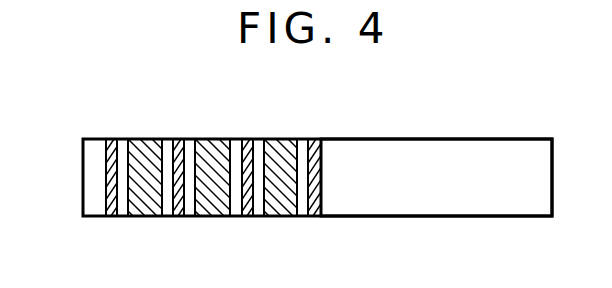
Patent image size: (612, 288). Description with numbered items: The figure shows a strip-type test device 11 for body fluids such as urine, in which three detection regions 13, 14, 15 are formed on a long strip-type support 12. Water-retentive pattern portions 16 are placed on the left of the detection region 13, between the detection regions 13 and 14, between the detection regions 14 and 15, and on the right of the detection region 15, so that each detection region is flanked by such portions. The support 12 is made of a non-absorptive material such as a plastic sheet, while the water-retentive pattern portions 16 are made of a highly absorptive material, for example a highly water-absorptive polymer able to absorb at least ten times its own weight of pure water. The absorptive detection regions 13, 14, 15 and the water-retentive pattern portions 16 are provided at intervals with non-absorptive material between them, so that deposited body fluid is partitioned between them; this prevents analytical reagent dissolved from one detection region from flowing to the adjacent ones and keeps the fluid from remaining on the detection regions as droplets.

The strip-type test device 11 is at (82, 178).
The support 12 is at (438, 150).
The detection region 13 is at (143, 138).
The detection region 14 is at (215, 140).
The detection region 15 is at (277, 140).
The water-retentive pattern portions 16 is at (108, 217).